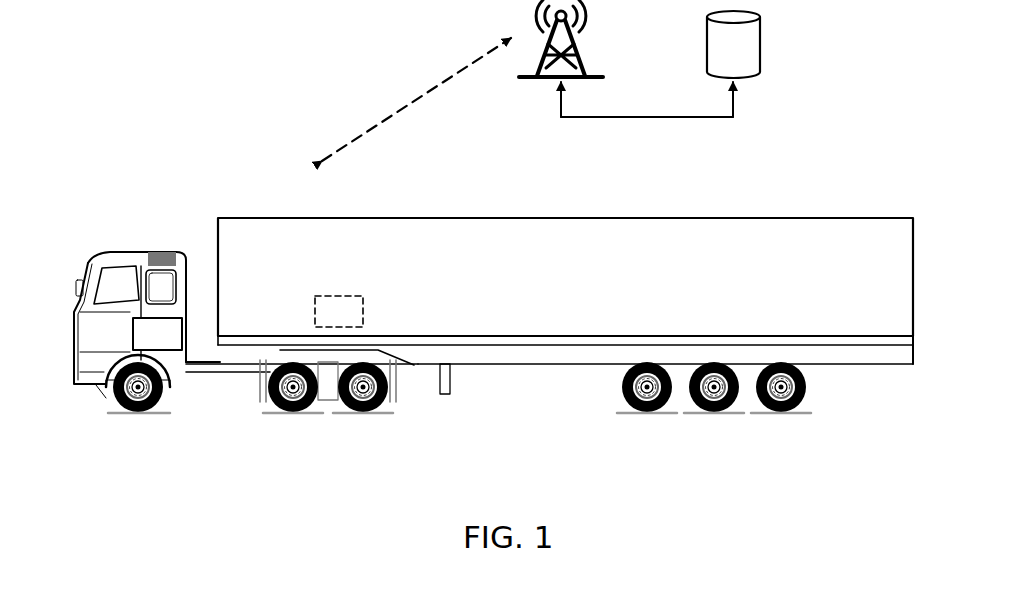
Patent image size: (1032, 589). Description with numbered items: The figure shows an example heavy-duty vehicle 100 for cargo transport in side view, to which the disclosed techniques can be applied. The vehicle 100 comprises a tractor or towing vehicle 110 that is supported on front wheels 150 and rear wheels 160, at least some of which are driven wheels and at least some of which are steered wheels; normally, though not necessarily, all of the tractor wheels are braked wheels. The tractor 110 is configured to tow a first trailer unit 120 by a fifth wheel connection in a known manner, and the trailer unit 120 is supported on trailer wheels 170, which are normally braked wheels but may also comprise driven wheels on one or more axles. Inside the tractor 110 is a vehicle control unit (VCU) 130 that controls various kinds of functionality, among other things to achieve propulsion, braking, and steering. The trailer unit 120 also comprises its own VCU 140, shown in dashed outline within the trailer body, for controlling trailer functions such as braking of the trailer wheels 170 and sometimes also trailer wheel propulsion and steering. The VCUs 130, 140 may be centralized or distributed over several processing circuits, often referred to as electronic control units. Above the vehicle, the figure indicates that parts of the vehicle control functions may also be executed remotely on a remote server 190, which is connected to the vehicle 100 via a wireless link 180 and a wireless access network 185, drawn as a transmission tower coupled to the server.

The vehicle 100 is at (106, 159).
The tractor 110 is at (110, 252).
The first trailer unit 120 is at (405, 221).
The vehicle control unit (VCU) 130 is at (157, 334).
The VCU 140 is at (339, 311).
The front wheels 150 is at (114, 426).
The rear wheels 160 is at (295, 426).
The trailer wheels 170 is at (780, 439).
The wireless link 180 is at (416, 99).
The wireless access network 185 is at (598, 70).
The remote server 190 is at (760, 55).